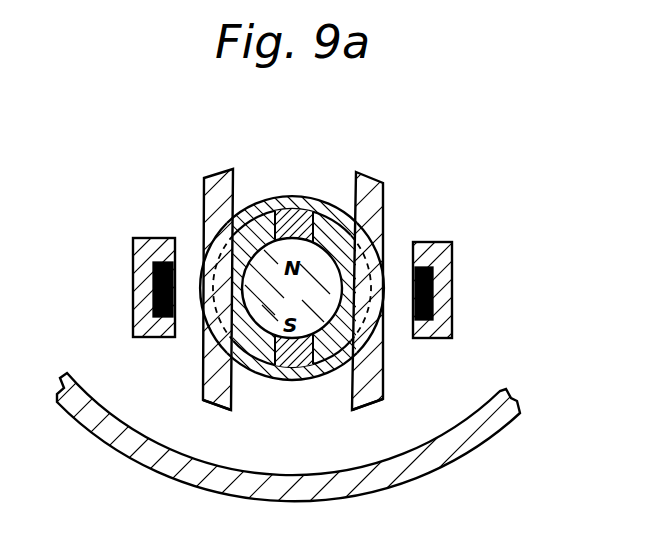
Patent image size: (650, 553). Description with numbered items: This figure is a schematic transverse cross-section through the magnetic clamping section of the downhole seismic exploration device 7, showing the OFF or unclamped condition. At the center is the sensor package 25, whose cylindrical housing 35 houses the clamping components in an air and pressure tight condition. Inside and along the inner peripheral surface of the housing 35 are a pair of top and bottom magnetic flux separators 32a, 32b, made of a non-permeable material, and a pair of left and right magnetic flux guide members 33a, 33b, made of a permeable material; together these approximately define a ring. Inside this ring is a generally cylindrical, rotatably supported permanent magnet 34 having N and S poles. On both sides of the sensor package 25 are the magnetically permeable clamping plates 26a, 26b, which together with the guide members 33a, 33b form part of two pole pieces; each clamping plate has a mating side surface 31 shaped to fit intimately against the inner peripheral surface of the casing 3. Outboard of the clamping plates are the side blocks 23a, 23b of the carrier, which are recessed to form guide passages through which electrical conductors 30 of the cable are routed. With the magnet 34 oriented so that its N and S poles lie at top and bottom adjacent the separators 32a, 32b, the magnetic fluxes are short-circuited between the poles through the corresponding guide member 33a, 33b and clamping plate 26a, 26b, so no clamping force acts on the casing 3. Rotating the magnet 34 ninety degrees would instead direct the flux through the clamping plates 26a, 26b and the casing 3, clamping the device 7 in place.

The casing 3 is at (486, 428).
The downhole seismic exploration device 7 is at (397, 182).
The side block 23a is at (135, 248).
The side block 23b is at (440, 258).
The sensor package 25 is at (332, 203).
The clamping plate 26a is at (210, 200).
The clamping plate 26b is at (383, 206).
The electrical conductors 30 is at (153, 290).
The mating side surface 31 is at (207, 412).
The magnetic flux separator 32a is at (303, 210).
The magnetic flux separator 32b is at (296, 368).
The magnetic flux guide member 33a is at (262, 362).
The magnetic flux guide member 33b is at (348, 368).
The permanent magnet 34 is at (370, 350).
The cylindrical housing 35 is at (264, 203).